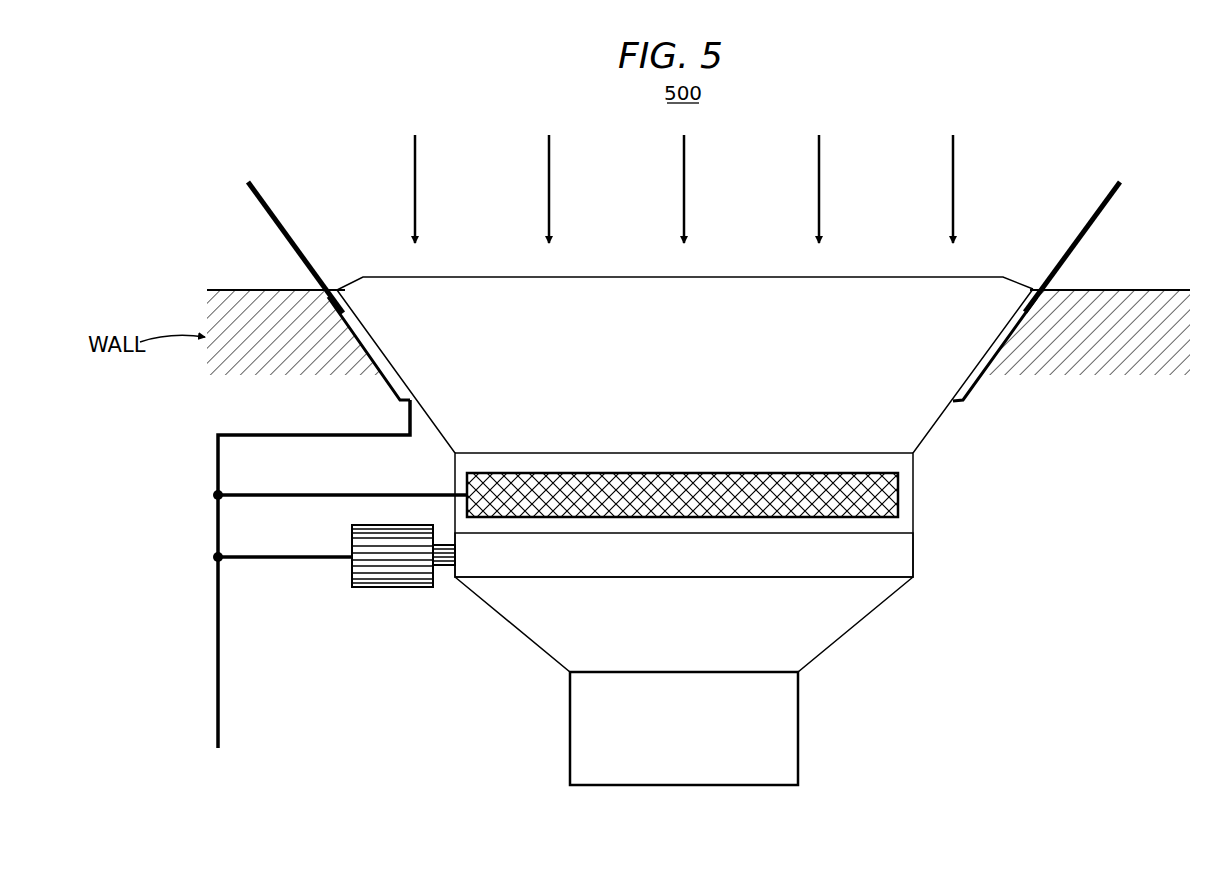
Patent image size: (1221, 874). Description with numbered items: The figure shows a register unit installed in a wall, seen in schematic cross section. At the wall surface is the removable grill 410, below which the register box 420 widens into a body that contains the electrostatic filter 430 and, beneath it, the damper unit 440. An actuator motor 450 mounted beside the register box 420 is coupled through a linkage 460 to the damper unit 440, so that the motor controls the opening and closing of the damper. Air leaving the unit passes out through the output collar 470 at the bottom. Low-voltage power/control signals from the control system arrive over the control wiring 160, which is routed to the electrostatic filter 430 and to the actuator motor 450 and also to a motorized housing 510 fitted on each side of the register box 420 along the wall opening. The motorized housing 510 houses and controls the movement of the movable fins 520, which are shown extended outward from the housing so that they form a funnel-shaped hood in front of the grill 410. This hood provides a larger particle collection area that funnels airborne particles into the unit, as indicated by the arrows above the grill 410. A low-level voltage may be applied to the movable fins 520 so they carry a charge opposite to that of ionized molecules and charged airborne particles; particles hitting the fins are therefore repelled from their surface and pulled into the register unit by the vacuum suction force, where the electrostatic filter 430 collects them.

The control wiring 160 is at (216, 650).
The removable grill 410 is at (972, 275).
The register box 420 is at (938, 425).
The electrostatic filter 430 is at (899, 497).
The damper unit 440 is at (913, 557).
The actuator motor 450 is at (352, 578).
The linkage 460 is at (443, 568).
The output collar 470 is at (570, 727).
The motorized housing 510 is at (392, 388).
The movable fins 520 is at (278, 222).